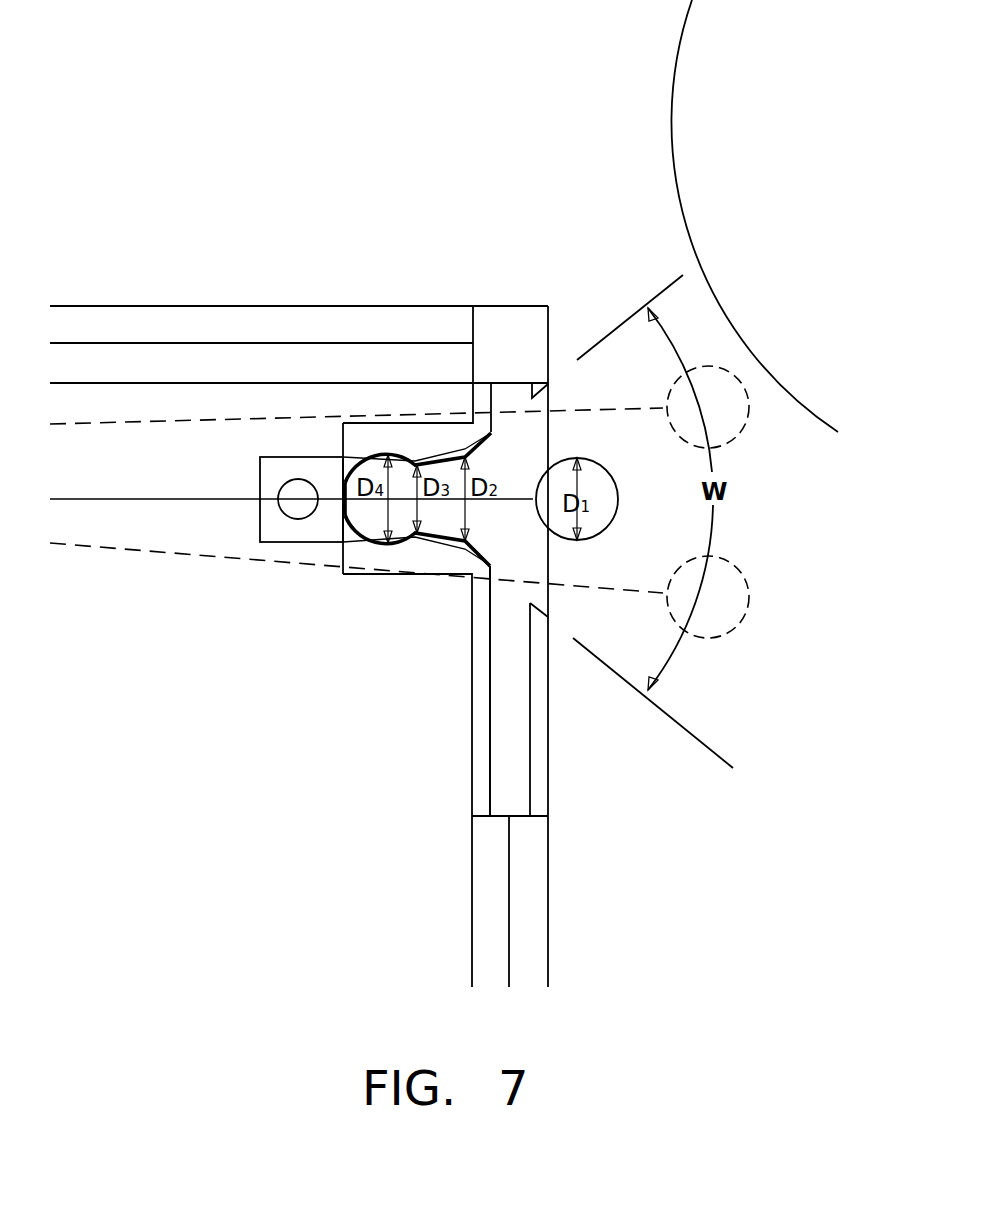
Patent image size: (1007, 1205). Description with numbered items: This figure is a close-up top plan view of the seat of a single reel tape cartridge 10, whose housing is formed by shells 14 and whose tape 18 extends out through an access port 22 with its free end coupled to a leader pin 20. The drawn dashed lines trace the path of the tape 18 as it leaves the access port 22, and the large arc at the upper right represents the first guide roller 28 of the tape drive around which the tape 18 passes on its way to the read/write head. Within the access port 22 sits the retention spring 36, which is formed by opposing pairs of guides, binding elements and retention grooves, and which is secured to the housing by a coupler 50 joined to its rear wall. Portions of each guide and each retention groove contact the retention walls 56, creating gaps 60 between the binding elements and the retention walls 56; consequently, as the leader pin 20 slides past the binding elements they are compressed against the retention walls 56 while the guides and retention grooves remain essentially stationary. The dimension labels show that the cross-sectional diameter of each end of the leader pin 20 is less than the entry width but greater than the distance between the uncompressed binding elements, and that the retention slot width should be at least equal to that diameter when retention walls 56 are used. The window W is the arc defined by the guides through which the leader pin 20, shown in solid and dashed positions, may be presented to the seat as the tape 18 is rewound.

The tape cartridge 10 is at (278, 248).
The shells 14 is at (428, 325).
The tape 18 is at (222, 500).
The leader pin 20 is at (610, 497).
The access port 22 is at (503, 748).
The first guide roller 28 is at (680, 120).
The retention spring 36 is at (277, 573).
The coupler 50 is at (268, 463).
The retention walls 56 is at (343, 440).
The gaps 60 is at (422, 455).